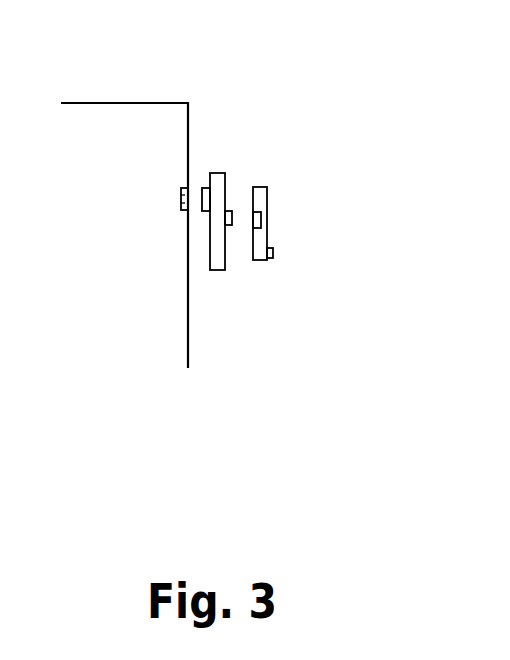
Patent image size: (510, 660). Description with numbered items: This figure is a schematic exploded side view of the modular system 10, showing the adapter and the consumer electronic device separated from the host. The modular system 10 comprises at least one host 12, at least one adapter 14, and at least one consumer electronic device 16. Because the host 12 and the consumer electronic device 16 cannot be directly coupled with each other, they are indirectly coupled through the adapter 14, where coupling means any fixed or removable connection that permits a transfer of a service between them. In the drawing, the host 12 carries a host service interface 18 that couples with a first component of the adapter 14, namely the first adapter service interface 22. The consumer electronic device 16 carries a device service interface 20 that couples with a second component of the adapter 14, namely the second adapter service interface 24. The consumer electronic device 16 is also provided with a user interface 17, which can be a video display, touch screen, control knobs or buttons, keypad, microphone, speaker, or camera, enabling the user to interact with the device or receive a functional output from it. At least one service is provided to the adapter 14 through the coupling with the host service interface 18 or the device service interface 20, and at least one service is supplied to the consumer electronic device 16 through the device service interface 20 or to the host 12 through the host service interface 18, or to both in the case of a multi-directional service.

The modular system 10 is at (79, 56).
The host 12 is at (148, 103).
The adapter 14 is at (226, 177).
The consumer electronic device 16 is at (268, 218).
The user interface 17 is at (273, 253).
The host service interface 18 is at (180, 195).
The device service interface 20 is at (254, 228).
The first adapter service interface 22 is at (203, 188).
The second adapter service interface 24 is at (228, 225).